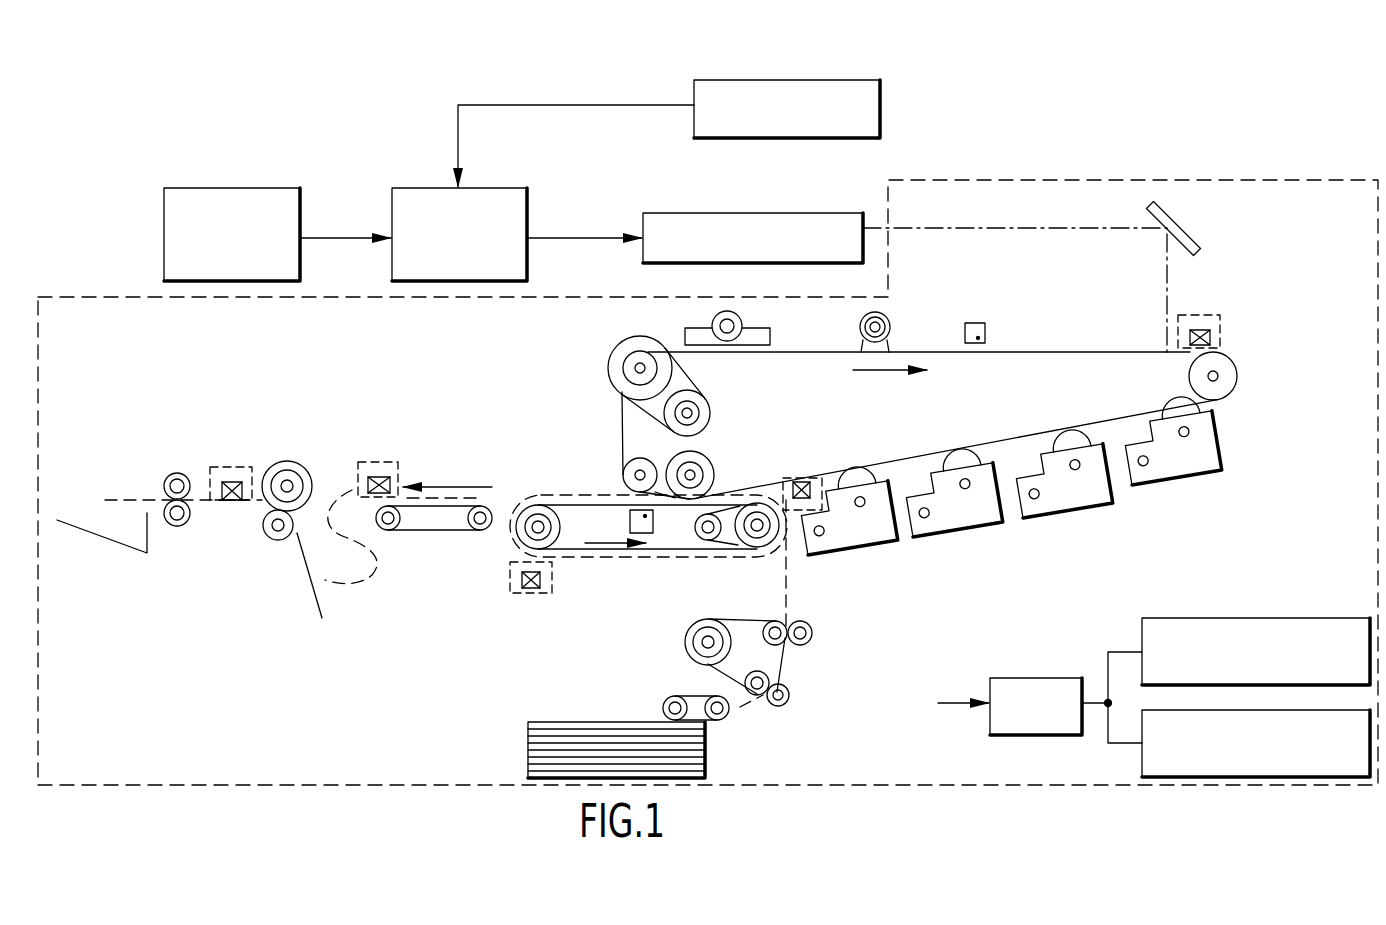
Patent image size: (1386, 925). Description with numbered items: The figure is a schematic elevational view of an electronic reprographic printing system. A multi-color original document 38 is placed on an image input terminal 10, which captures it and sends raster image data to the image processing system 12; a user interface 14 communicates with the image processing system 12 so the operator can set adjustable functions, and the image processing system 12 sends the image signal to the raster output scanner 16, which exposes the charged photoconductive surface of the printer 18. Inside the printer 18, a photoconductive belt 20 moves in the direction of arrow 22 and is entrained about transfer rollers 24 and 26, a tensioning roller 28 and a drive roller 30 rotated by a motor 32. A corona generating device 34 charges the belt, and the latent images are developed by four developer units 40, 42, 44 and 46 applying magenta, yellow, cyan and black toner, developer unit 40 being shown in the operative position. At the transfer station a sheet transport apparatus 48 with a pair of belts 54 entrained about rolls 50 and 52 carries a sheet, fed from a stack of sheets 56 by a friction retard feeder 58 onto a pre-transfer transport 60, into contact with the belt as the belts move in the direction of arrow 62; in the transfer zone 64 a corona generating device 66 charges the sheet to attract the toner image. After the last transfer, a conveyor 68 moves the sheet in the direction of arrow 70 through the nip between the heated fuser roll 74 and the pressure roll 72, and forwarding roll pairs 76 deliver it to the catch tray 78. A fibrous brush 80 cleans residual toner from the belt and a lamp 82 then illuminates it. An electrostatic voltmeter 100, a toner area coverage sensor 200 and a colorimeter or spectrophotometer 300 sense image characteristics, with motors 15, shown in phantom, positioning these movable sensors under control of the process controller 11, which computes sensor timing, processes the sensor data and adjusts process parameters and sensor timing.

The image input terminal 10 is at (678, 87).
The process controller 11 is at (1023, 718).
The image processing system 12 is at (543, 212).
The user interface 14 is at (318, 215).
The motors 15 is at (1212, 315).
The raster output scanner 16 is at (793, 196).
The printer 18 is at (1252, 172).
The photoconductive belt 20 is at (1108, 352).
The arrow 22 is at (882, 372).
The transfer roller 24 is at (627, 474).
The transfer roller 26 is at (717, 463).
The tensioning roller 28 is at (1225, 365).
The drive roller 30 is at (610, 367).
The motor 32 is at (705, 400).
The corona generating device 34 is at (975, 322).
The multi-color original document 38 is at (880, 92).
The developer unit 40 is at (1180, 473).
The developer unit 42 is at (1083, 500).
The developer unit 44 is at (965, 520).
The developer unit 46 is at (860, 537).
The sheet transport apparatus 48 is at (612, 582).
The roll 50 is at (522, 538).
The roll 52 is at (755, 548).
The belts 54 is at (667, 552).
The stack of sheets 56 is at (607, 720).
The friction retard feeder 58 is at (688, 700).
The pre-transfer transport 60 is at (785, 660).
The arrow 62 is at (623, 538).
The transfer zone 64 is at (663, 466).
The corona generating device 66 is at (654, 520).
The conveyor 68 is at (433, 532).
The arrow 70 is at (445, 485).
The pressure roll 72 is at (268, 540).
The heated fuser roll 74 is at (302, 465).
The forwarding roll pairs 76 is at (190, 478).
The catch tray 78 is at (103, 537).
The fibrous brush 80 is at (743, 323).
The lamp 82 is at (890, 313).
The electrostatic voltmeter 100 is at (1202, 330).
The toner area coverage sensor 200 is at (803, 480).
The colorimeter or spectrophotometer 300 is at (228, 500).